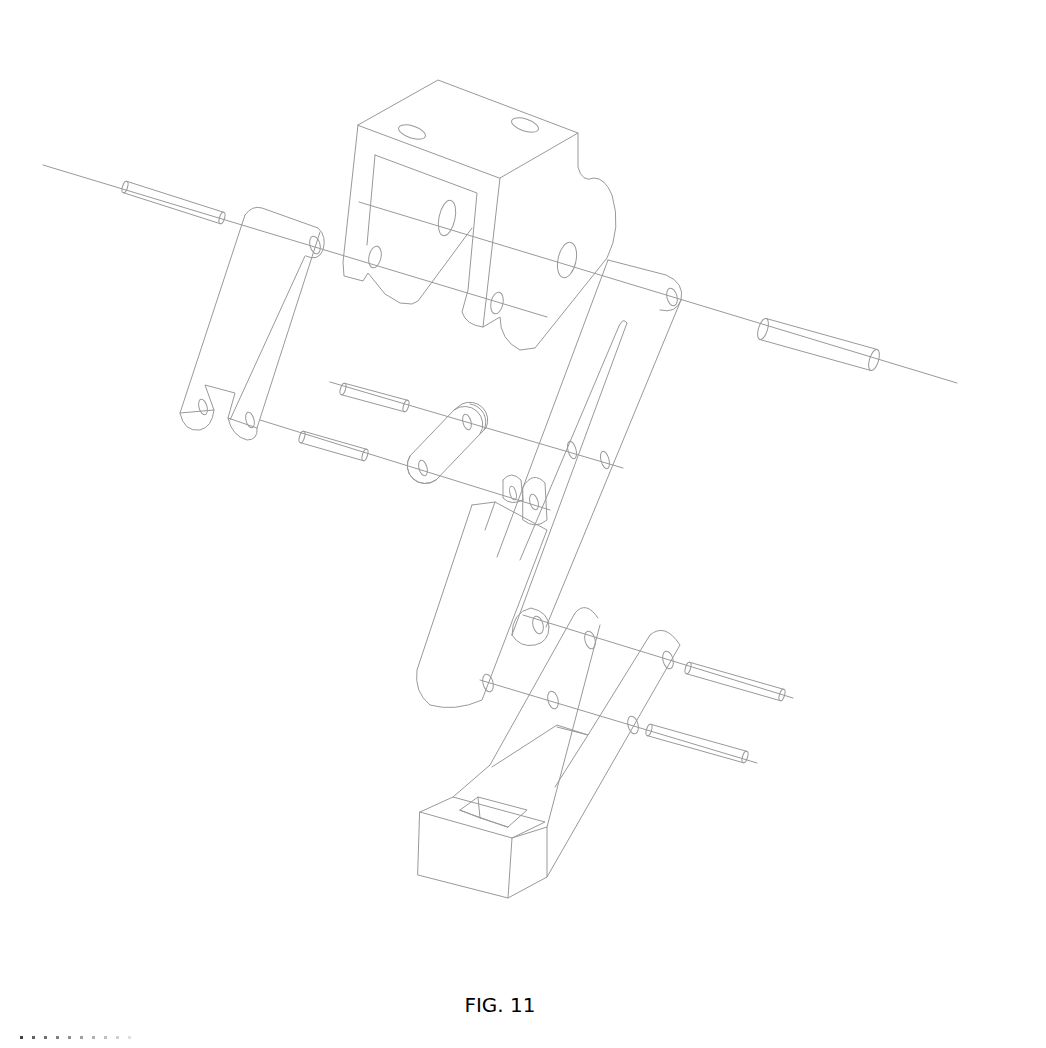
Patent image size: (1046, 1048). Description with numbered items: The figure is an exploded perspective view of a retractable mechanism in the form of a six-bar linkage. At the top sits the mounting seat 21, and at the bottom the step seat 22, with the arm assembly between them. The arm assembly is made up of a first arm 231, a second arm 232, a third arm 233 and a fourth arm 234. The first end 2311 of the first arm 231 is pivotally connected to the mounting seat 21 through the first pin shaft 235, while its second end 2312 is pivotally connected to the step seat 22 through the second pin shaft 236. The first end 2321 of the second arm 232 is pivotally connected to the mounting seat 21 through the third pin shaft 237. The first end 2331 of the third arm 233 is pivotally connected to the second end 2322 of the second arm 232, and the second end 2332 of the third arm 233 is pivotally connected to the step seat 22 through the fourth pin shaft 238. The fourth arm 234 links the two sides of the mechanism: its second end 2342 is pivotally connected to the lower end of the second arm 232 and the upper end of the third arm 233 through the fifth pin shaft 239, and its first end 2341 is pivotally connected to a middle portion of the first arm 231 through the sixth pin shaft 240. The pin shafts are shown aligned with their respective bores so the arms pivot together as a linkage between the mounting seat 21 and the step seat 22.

The mounting seat 21 is at (462, 117).
The step seat 22 is at (520, 872).
The first arm 231 is at (608, 441).
The first end of the first arm 2311 is at (633, 275).
The second end of the first arm 2312 is at (530, 602).
The second arm 232 is at (203, 294).
The first end of the second arm 2321 is at (273, 227).
The second end of the second arm 2322 is at (193, 387).
The third arm 233 is at (447, 596).
The first end of the third arm 2331 is at (497, 503).
The second end of the third arm 2332 is at (437, 678).
The fourth arm 234 is at (439, 459).
The first end of the fourth arm 2341 is at (447, 413).
The second end of the fourth arm 2342 is at (410, 480).
The first pin shaft 235 is at (817, 338).
The second pin shaft 236 is at (752, 675).
The third pin shaft 237 is at (185, 202).
The fourth pin shaft 238 is at (720, 745).
The fifth pin shaft 239 is at (332, 442).
The sixth pin shaft 240 is at (397, 392).